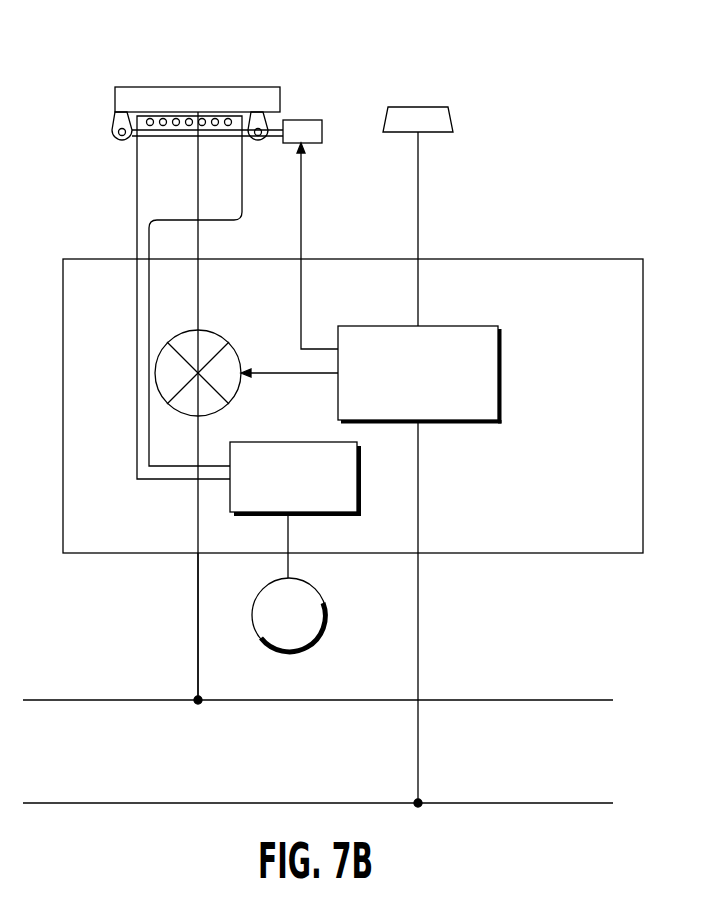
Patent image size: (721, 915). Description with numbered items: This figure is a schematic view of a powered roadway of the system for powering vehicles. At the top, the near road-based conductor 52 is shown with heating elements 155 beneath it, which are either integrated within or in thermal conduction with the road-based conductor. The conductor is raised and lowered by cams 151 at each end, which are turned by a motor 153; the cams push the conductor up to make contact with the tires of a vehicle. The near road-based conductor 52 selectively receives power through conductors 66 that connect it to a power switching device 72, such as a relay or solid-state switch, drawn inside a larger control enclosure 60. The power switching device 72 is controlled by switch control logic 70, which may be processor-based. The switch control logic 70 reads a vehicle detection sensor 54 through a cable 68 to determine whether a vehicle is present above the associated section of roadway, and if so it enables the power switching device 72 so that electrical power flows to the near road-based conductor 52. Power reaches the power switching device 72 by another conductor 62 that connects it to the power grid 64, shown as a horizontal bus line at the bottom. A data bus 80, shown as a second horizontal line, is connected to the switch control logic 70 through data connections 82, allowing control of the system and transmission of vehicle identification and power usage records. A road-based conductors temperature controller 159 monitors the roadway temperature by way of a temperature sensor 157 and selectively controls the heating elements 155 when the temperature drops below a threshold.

The near road-based conductor 52 is at (268, 87).
The heating elements 155 is at (172, 116).
The cams 151 is at (121, 144).
The motors 153 is at (300, 120).
The vehicle detection sensor 54 is at (453, 120).
The cable 68 is at (418, 195).
The conductors 66 is at (198, 156).
The control unit 60 is at (643, 290).
The power switching device 72 is at (218, 340).
The switch control logic 70 is at (500, 378).
The data connections 82 is at (418, 492).
The road-based conductors temperature controller 159 is at (320, 513).
The temperature sensor 157 is at (328, 620).
The conductor 62 is at (197, 623).
The power grid 64 is at (187, 702).
The data bus 80 is at (185, 804).